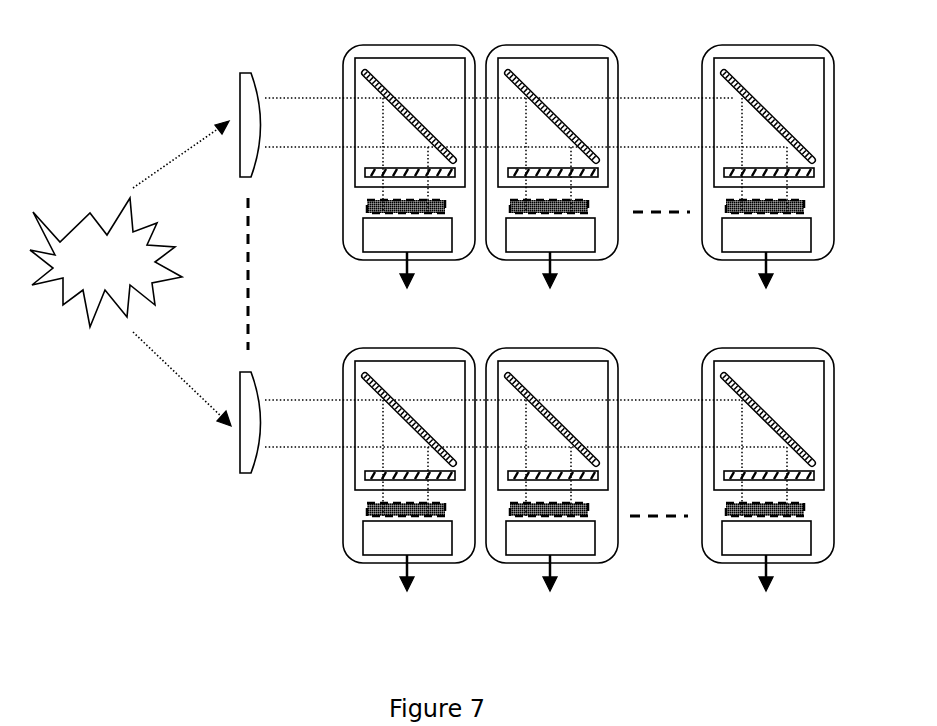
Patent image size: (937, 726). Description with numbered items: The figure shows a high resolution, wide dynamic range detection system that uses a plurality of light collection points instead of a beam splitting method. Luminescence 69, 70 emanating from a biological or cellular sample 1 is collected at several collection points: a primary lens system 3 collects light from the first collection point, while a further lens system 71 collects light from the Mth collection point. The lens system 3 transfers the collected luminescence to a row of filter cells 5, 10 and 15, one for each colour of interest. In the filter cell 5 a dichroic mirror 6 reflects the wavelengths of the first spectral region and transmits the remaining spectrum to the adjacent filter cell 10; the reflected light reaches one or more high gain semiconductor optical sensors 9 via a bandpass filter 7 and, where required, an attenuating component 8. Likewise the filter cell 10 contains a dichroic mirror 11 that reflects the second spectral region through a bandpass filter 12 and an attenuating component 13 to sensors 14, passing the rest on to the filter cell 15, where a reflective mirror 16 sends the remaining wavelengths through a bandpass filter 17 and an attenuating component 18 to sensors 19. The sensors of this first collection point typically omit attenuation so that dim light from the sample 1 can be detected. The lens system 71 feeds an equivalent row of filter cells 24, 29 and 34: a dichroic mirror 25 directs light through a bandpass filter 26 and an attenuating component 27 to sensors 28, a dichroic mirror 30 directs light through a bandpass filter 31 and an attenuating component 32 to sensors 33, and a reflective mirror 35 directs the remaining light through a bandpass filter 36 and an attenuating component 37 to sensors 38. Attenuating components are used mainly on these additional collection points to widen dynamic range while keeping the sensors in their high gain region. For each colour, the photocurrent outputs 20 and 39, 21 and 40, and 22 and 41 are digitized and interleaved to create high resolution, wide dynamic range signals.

The sample 1 is at (93, 245).
The lens system 3 is at (250, 111).
The filter cell 5 is at (395, 162).
The dichroic mirror 6 is at (376, 78).
The bandpass filter 7 is at (367, 172).
The attenuating component 8 is at (368, 208).
The high gain semiconductor optical sensors 9 is at (407, 235).
The filter cell 10 is at (568, 162).
The dichroic mirror 11 is at (519, 78).
The bandpass filter 12 is at (597, 174).
The attenuating component 13 is at (587, 210).
The high gain semiconductor optical sensors 14 is at (550, 235).
The filter cell 15 is at (751, 162).
The reflective mirror 16 is at (735, 78).
The bandpass filter 17 is at (724, 172).
The attenuating component 18 is at (728, 204).
The high gain semiconductor optical sensors 19 is at (766, 235).
The photocurrent output 20 is at (417, 274).
The photocurrent output 21 is at (561, 274).
The photocurrent output 22 is at (776, 274).
The filter cell 24 is at (393, 465).
The dichroic mirror 25 is at (376, 381).
The bandpass filter 26 is at (365, 476).
The attenuating component 27 is at (368, 512).
The high gain semiconductor optical sensors 28 is at (407, 538).
The filter cell 29 is at (566, 465).
The dichroic mirror 30 is at (519, 381).
The bandpass filter 31 is at (597, 477).
The attenuating component 32 is at (588, 513).
The high gain semiconductor optical sensors 33 is at (550, 538).
The filter cell 34 is at (748, 465).
The reflective mirror 35 is at (735, 381).
The bandpass filter 36 is at (724, 475).
The attenuating component 37 is at (728, 508).
The high gain semiconductor optical sensors 38 is at (766, 538).
The photocurrent output 39 is at (417, 577).
The photocurrent output 40 is at (560, 577).
The photocurrent output 41 is at (776, 577).
The luminescence 69 is at (181, 154).
The luminescence 70 is at (182, 379).
The lens system 71 is at (251, 439).